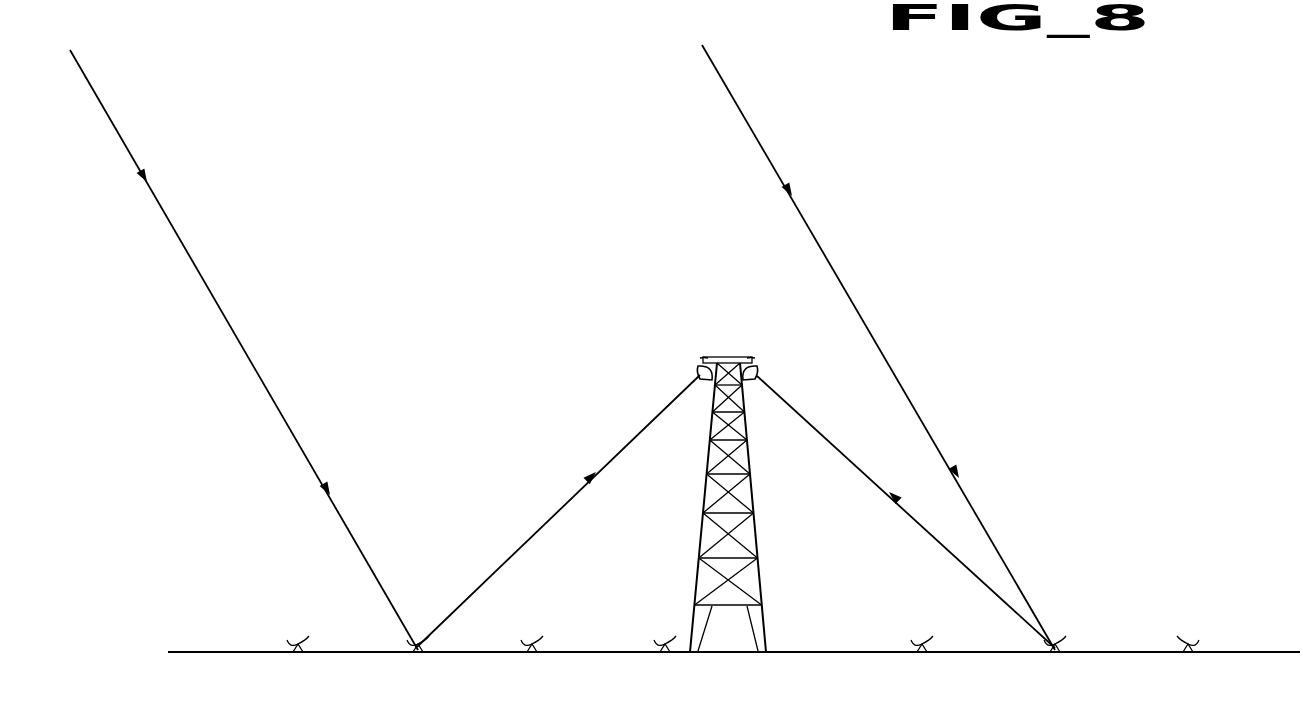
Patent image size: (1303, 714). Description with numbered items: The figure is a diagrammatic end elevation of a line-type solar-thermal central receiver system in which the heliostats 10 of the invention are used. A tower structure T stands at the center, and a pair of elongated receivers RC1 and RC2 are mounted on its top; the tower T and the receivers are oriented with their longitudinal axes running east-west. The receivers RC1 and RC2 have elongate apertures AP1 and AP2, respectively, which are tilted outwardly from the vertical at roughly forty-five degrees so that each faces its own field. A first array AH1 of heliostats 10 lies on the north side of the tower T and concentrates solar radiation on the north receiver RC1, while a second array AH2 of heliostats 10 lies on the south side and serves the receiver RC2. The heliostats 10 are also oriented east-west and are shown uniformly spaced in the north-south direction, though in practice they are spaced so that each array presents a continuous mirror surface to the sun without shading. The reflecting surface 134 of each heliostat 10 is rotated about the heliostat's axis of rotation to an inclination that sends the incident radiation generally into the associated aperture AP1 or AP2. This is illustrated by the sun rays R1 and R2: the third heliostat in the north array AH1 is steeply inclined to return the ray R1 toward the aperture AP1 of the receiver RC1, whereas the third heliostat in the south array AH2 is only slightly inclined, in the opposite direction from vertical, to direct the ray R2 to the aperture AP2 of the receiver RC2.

The sun ray R1 is at (808, 224).
The sun ray R2 is at (189, 256).
The north receiver RC1 is at (758, 359).
The receiver RC2 is at (702, 357).
The aperture AP1 is at (766, 372).
The aperture AP2 is at (695, 373).
The tower structure T is at (750, 466).
The first array of heliostats AH1 is at (1145, 594).
The second array of heliostats AH2 is at (298, 601).
The heliostat 10 is at (412, 645).
The reflecting surface 134 is at (291, 640).